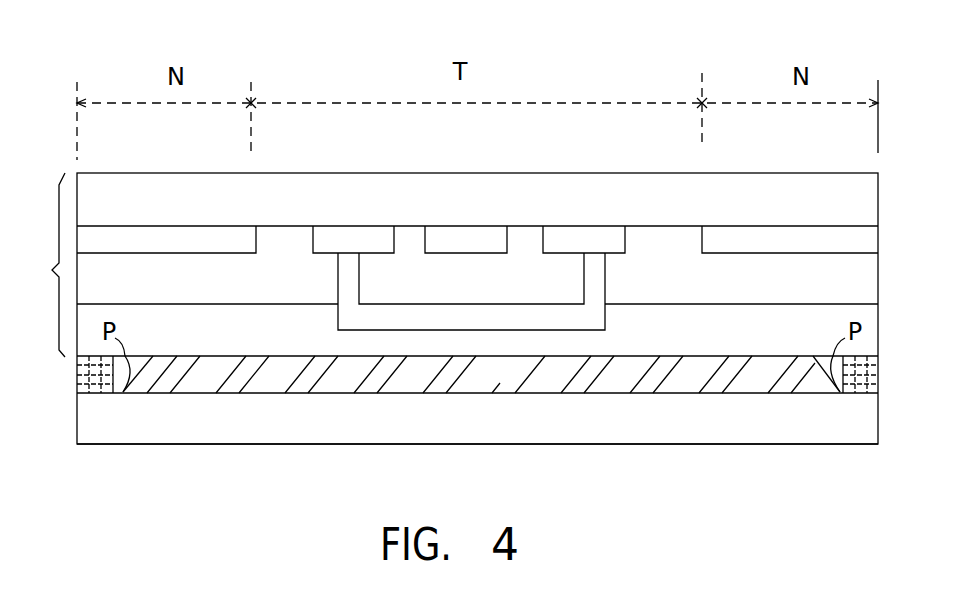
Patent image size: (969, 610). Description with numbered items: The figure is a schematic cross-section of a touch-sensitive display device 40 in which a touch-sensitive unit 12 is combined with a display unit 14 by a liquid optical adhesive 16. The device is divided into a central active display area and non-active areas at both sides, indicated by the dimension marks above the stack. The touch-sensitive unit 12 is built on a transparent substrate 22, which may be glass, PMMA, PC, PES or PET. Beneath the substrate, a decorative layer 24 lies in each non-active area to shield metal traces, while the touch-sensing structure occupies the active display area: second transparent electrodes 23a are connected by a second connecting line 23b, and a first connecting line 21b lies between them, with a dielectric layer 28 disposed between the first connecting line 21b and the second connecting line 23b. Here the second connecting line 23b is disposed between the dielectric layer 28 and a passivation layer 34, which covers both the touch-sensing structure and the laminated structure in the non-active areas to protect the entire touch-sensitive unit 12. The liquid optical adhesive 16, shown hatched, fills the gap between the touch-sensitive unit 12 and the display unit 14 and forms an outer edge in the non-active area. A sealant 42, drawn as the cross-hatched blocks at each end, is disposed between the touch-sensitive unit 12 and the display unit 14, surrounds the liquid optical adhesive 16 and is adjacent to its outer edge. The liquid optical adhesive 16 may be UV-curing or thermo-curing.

The touch-sensitive display device 40 is at (119, 23).
The touch-sensitive unit 12 is at (40, 265).
The transparent substrate 22 is at (465, 210).
The decorative layer 24 is at (153, 251).
The second transparent electrodes 23a is at (332, 250).
The first connecting lines 21b is at (447, 250).
The second connecting lines 23b is at (449, 326).
The dielectric layer 28 is at (189, 289).
The passivation layer 34 is at (189, 338).
The liquid optical adhesive 16 is at (473, 384).
The sealant 42 is at (88, 376).
The display unit 14 is at (467, 430).